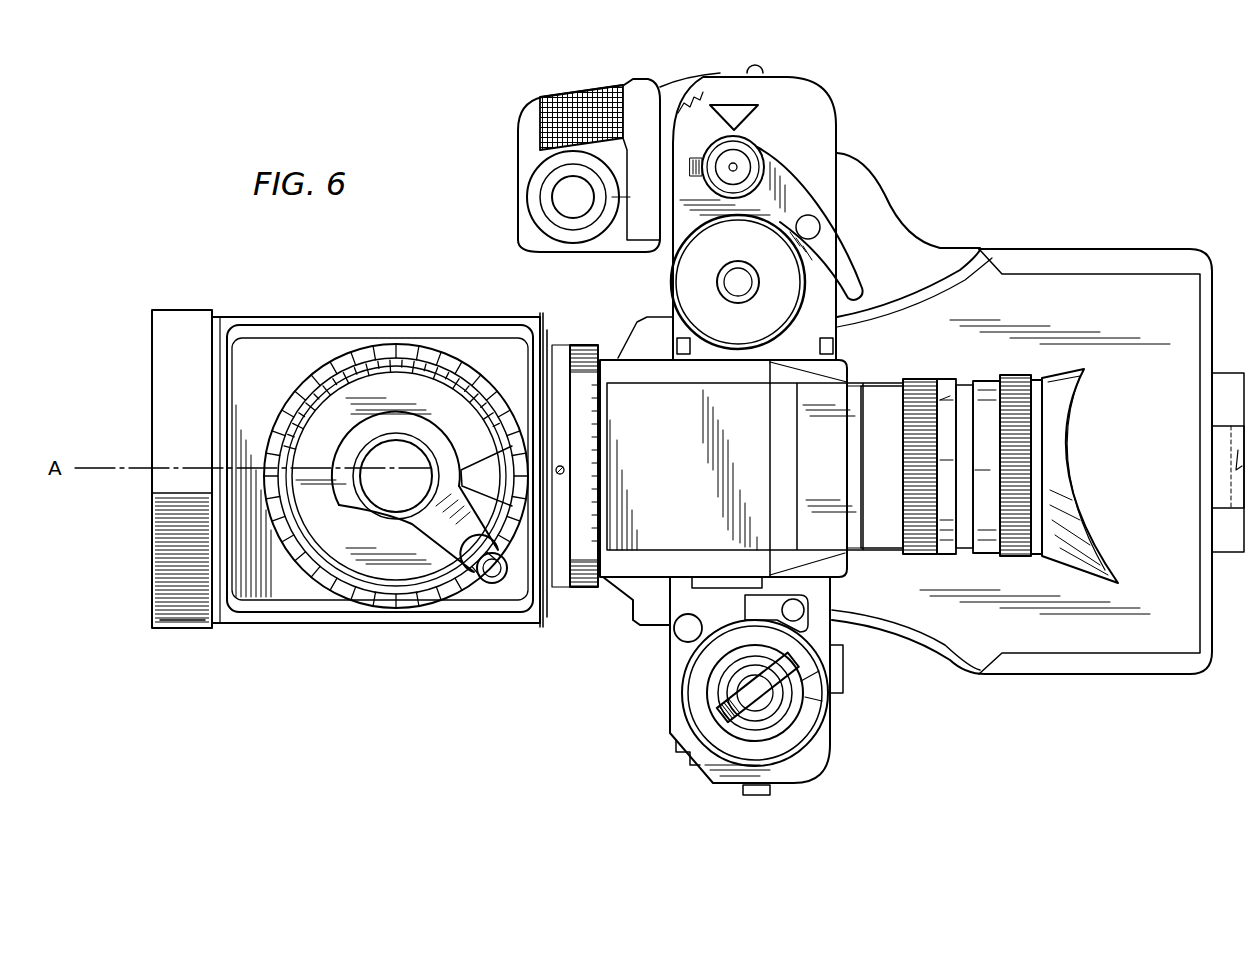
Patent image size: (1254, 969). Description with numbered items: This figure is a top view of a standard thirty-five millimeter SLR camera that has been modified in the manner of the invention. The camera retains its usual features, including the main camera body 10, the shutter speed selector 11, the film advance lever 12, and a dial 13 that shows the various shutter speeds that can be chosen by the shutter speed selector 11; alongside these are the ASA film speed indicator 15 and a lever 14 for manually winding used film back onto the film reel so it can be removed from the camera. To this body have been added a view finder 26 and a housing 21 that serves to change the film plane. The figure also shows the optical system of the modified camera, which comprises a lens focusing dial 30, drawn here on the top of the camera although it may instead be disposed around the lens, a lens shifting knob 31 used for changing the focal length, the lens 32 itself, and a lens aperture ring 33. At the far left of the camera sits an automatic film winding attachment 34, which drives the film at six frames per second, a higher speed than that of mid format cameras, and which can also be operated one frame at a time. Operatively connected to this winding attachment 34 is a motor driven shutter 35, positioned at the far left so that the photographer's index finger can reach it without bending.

The main camera body 10 is at (669, 690).
The shutter speed selector 11 is at (808, 268).
The film advance lever 12 is at (787, 177).
The dial 13 is at (680, 297).
The lever 14 is at (745, 708).
The ASA film speed indicator 15 is at (823, 731).
The housing 21 is at (1131, 275).
The view finder 26 is at (983, 552).
The lens focusing dial 30 is at (353, 565).
The lens shifting knob 31 is at (492, 584).
The lens 32 is at (143, 308).
The lens aperture ring 33 is at (587, 588).
The automatic film winding attachment 34 is at (599, 92).
The motor driven shutter 35 is at (565, 198).